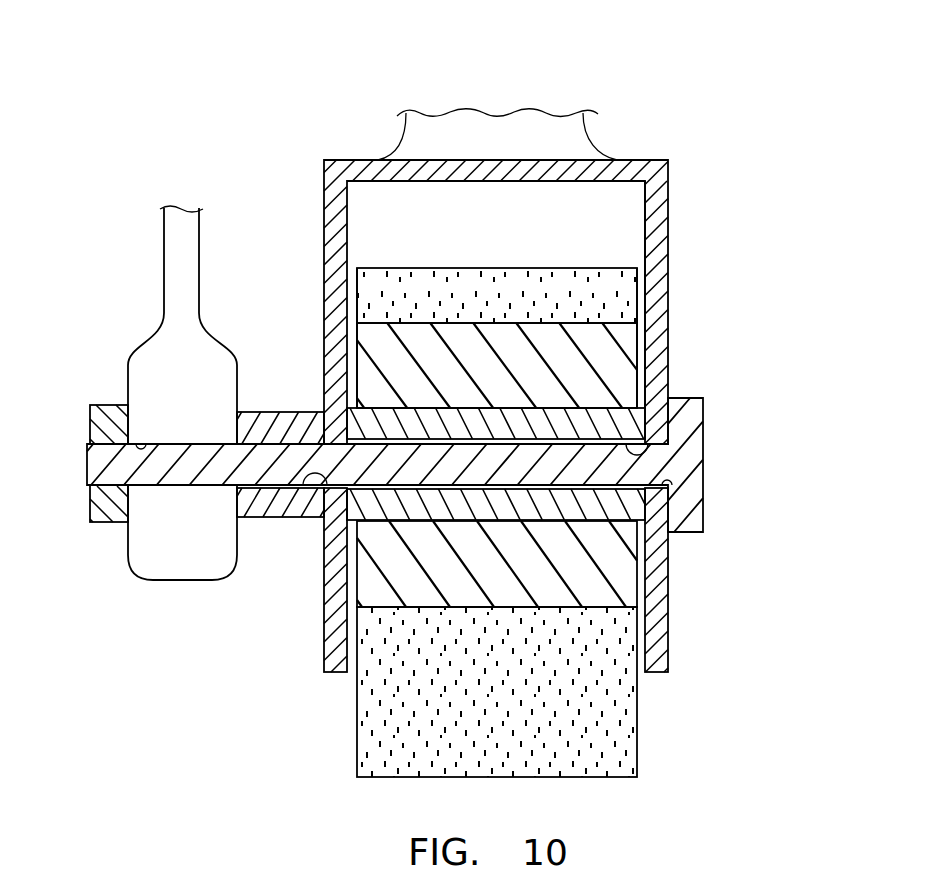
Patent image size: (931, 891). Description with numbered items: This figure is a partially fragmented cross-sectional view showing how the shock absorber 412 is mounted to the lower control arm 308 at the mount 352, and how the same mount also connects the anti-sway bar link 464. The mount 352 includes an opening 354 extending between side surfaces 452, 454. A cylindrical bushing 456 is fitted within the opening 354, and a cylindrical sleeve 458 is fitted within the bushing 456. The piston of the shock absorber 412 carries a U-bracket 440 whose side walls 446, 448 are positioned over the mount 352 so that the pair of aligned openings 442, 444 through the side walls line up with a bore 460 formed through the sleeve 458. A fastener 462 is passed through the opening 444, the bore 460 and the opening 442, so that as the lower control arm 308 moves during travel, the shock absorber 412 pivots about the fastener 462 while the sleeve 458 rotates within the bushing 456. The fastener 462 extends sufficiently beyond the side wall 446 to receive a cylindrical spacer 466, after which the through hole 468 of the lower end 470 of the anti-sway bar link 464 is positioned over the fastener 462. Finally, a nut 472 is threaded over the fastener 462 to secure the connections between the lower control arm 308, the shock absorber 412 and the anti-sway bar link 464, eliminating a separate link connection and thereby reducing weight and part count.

The lower control arm 308 is at (660, 737).
The mount 352 is at (588, 262).
The opening 354 is at (592, 333).
The shock absorber 412 is at (702, 96).
The U-bracket 440 is at (678, 193).
The opening 442 is at (298, 488).
The opening 444 is at (671, 488).
The side wall 446 is at (326, 616).
The side wall 448 is at (670, 597).
The side surface 452 is at (651, 378).
The side surface 454 is at (357, 375).
The cylindrical bushing 456 is at (418, 327).
The cylindrical sleeve 458 is at (478, 410).
The bore 460 is at (646, 452).
The fastener 462 is at (697, 487).
The anti-sway bar link 464 is at (134, 282).
The cylindrical spacer 466 is at (270, 514).
The through hole 468 is at (147, 445).
The lower end 470 is at (138, 543).
The nut 472 is at (92, 500).